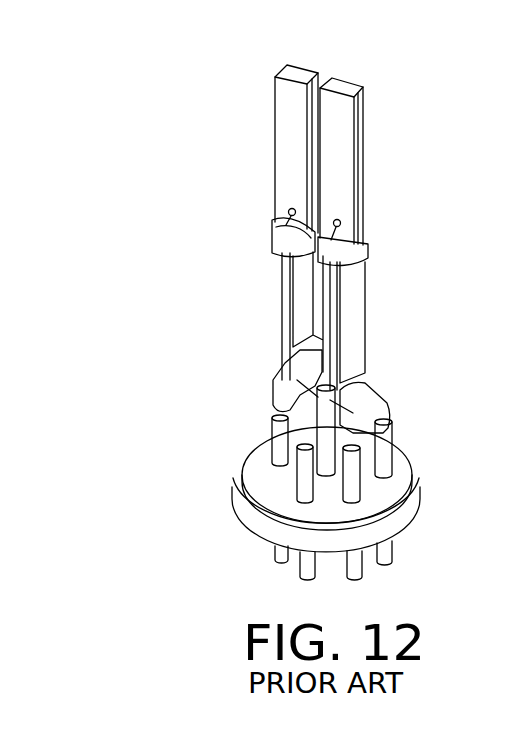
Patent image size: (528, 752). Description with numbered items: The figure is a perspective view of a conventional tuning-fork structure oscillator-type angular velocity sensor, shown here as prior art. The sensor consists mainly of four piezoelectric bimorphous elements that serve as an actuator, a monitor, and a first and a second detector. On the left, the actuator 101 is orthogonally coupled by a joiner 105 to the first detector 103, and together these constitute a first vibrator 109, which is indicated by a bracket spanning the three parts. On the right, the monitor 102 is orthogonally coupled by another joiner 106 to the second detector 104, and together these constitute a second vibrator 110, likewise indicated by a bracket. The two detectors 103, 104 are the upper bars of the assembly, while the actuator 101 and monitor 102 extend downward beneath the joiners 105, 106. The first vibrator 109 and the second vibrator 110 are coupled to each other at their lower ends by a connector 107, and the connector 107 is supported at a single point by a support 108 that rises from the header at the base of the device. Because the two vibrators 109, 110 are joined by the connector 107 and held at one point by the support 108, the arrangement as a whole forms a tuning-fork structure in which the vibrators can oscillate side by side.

The actuator 101 is at (300, 314).
The monitor 102 is at (362, 318).
The first detector 103 is at (280, 157).
The second detector 104 is at (340, 152).
The joiner 105 is at (273, 231).
The joiner 106 is at (362, 247).
The connector 107 is at (298, 367).
The support 108 is at (385, 410).
The first vibrator 109 is at (220, 107).
The second vibrator 110 is at (420, 82).